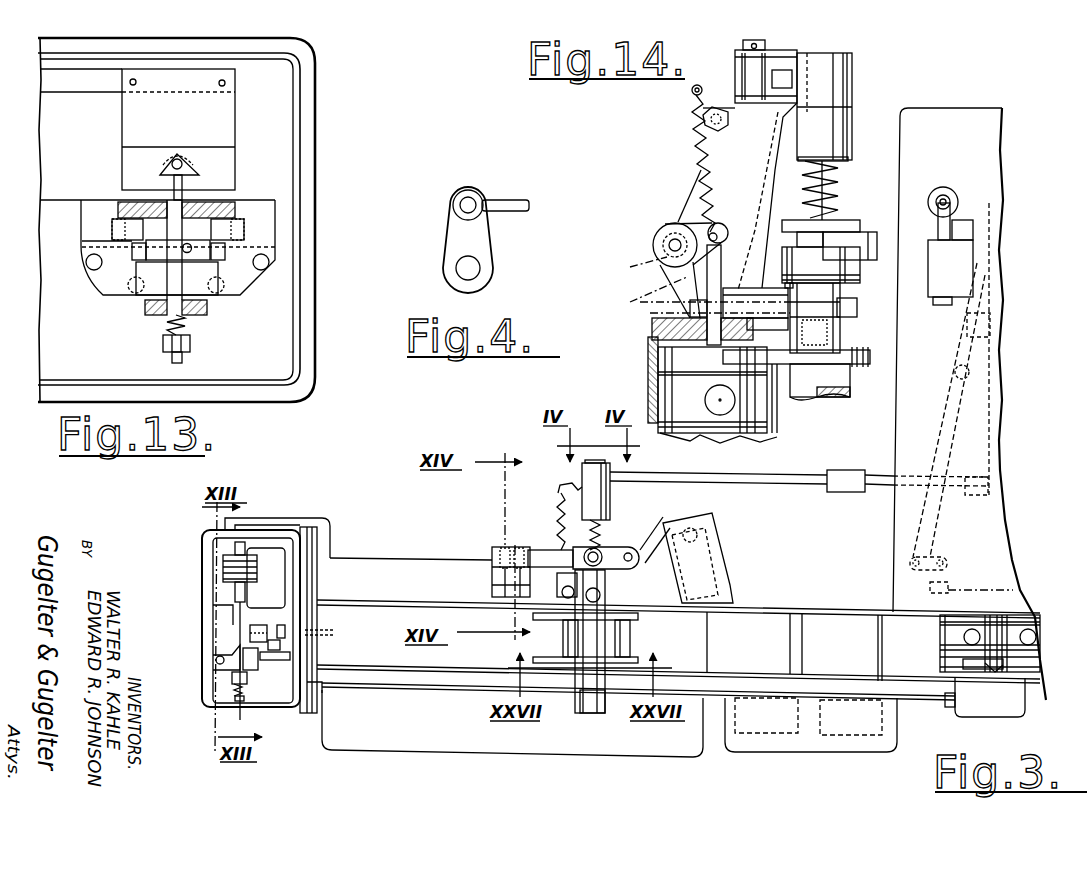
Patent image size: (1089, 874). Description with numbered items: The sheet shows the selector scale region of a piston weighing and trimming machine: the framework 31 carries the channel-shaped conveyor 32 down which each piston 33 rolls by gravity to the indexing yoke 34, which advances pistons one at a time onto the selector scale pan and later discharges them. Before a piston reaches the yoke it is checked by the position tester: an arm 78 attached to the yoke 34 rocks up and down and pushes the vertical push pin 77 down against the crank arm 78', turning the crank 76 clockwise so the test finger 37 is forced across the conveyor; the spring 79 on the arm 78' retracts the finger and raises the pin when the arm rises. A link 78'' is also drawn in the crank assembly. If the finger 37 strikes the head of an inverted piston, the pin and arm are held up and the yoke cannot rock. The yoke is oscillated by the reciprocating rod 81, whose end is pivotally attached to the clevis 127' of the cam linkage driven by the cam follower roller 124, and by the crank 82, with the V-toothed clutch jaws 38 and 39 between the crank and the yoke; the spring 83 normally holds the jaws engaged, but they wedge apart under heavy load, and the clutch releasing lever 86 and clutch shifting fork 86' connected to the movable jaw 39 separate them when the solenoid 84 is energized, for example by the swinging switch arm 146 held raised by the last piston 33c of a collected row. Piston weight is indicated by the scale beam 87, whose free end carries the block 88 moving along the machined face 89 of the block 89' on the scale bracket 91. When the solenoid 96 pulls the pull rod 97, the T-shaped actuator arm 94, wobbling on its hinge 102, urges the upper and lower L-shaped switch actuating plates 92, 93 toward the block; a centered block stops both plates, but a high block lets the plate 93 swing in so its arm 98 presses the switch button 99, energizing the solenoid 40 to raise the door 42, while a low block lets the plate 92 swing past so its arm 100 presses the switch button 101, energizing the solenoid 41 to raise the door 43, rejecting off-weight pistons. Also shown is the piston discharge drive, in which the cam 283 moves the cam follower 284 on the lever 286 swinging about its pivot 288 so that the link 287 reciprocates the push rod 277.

In FIG. 3, the framework 31 is at (902, 510).
In FIG. 3, the conveyor 32 is at (423, 662).
In FIG. 14, the piston 33 is at (700, 440).
In FIG. 3, the piston 33 is at (700, 440).
In FIG. 3, the last piston 33c is at (947, 632).
In FIG. 14, the indexing yoke 34 is at (863, 370).
In FIG. 3, the indexing yoke 34 is at (577, 657).
In FIG. 14, the test finger 37 is at (652, 328).
In FIG. 3, the test finger 37 is at (493, 567).
In FIG. 14, the clutch jaw 38 is at (852, 270).
In FIG. 3, the clutch jaw 38 is at (605, 540).
In FIG. 14, the movable clutch jaw 39 is at (857, 303).
In FIG. 3, the movable clutch jaw 39 is at (613, 573).
In FIG. 3, the solenoid 40 is at (767, 723).
In FIG. 3, the solenoid 41 is at (855, 725).
In FIG. 3, the door 42 is at (753, 628).
In FIG. 3, the door 43 is at (828, 627).
In FIG. 14, the crank 76 is at (655, 265).
In FIG. 3, the crank 76 is at (537, 530).
In FIG. 14, the push pin 77 is at (818, 313).
In FIG. 3, the push pin 77 is at (565, 588).
In FIG. 14, the arm 78 is at (804, 325).
In FIG. 3, the arm 78 is at (551, 622).
In FIG. 14, the crank arm 78' is at (659, 295).
In FIG. 3, the crank arm 78' is at (534, 509).
In FIG. 14, the link 78'' is at (662, 196).
In FIG. 14, the spring 79 is at (697, 143).
In FIG. 3, the spring 79 is at (562, 485).
In FIG. 4, the reciprocating rod 81 is at (527, 199).
In FIG. 3, the reciprocating rod 81 is at (792, 482).
In FIG. 4, the crank 82 is at (482, 237).
In FIG. 14, the crank 82 is at (780, 62).
In FIG. 14, the spring 83 is at (845, 185).
In FIG. 3, the spring 83 is at (608, 522).
In FIG. 3, the solenoid 84 is at (723, 555).
In FIG. 14, the clutch releasing lever 86 is at (715, 309).
In FIG. 3, the clutch releasing lever 86 is at (622, 552).
In FIG. 14, the clutch shifting fork 86' is at (831, 225).
In FIG. 13, the scale beam 87 is at (192, 230).
In FIG. 3, the scale beam 87 is at (292, 630).
In FIG. 13, the block 88 is at (168, 250).
In FIG. 3, the block 88 is at (260, 627).
In FIG. 13, the machined face 89 is at (182, 200).
In FIG. 13, the block 89' is at (127, 192).
In FIG. 13, the scale bracket 91 is at (86, 200).
In FIG. 13, the upper L-shaped switch actuating plate 92 is at (246, 283).
In FIG. 3, the upper L-shaped switch actuating plate 92 is at (263, 657).
In FIG. 13, the lower L-shaped switch actuating plate 93 is at (103, 276).
In FIG. 13, the T-shaped actuator arm 94 is at (198, 313).
In FIG. 3, the T-shaped actuator arm 94 is at (260, 680).
In FIG. 13, the solenoid 96 is at (223, 120).
In FIG. 3, the solenoid 96 is at (223, 565).
In FIG. 13, the pull rod 97 is at (172, 358).
In FIG. 3, the pull rod 97 is at (232, 680).
In FIG. 13, the arm 98 is at (130, 297).
In FIG. 3, the arm 98 is at (295, 652).
In FIG. 13, the switch button 99 is at (110, 252).
In FIG. 13, the arm 100 is at (220, 288).
In FIG. 13, the switch button 101 is at (241, 249).
In FIG. 3, the switch button 101 is at (293, 638).
In FIG. 3, the hinge 102 is at (217, 657).
In FIG. 3, the cam follower roller 124 is at (990, 327).
In FIG. 3, the clevis 127' is at (1010, 349).
In FIG. 3, the swinging switch arm 146 is at (987, 677).
In FIG. 3, the push rod 277 is at (982, 563).
In FIG. 3, the cam 283 is at (977, 263).
In FIG. 3, the cam follower 284 is at (990, 277).
In FIG. 3, the lever 286 is at (943, 423).
In FIG. 3, the link 287 is at (933, 558).
In FIG. 3, the pivot 288 is at (953, 372).